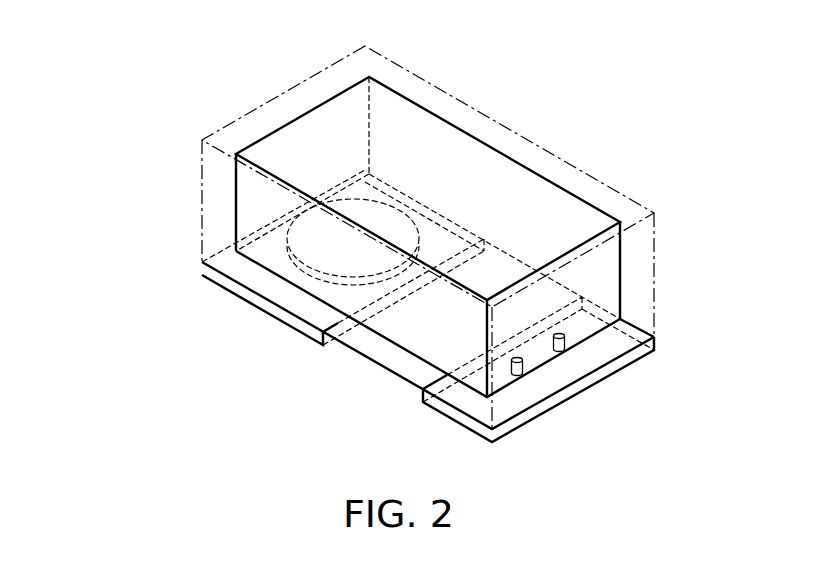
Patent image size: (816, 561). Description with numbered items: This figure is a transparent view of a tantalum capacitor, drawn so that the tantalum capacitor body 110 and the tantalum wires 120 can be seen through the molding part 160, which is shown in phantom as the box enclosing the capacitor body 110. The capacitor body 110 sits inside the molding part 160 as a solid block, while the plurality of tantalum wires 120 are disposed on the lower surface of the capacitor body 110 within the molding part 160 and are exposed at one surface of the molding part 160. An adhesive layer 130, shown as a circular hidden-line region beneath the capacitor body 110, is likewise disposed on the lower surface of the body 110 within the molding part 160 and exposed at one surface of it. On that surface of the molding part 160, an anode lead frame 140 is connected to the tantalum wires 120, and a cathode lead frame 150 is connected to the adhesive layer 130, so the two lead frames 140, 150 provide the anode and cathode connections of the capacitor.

The tantalum capacitor body 110 is at (507, 157).
The tantalum wires 120 is at (522, 370).
The adhesive layer 130 is at (318, 233).
The anode lead frame 140 is at (462, 414).
The cathode lead frame 150 is at (226, 278).
The molding part 160 is at (574, 167).